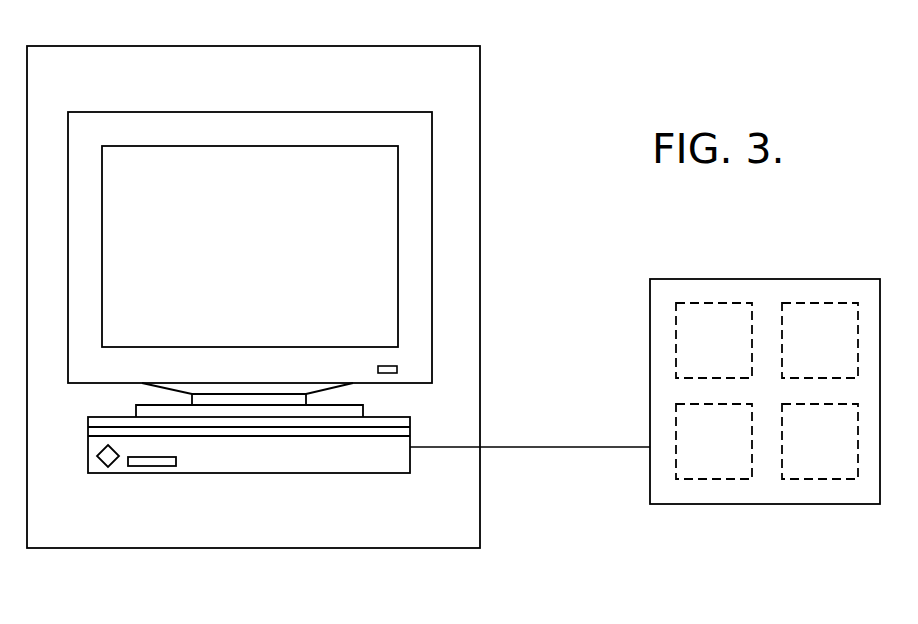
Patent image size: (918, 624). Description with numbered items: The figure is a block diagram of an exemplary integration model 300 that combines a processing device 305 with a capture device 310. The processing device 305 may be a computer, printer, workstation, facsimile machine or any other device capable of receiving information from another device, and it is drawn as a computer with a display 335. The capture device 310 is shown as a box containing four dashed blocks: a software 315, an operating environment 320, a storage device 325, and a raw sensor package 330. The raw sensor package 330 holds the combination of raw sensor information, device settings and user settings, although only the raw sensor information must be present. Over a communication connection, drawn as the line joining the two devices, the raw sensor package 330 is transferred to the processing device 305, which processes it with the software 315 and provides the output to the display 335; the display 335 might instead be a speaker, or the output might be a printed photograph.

The integration model 300 is at (600, 549).
The processing device 305 is at (178, 46).
The display 335 is at (353, 112).
The capture device 310 is at (650, 397).
The software 315 is at (818, 302).
The operating environment 320 is at (819, 480).
The storage device 325 is at (717, 302).
The raw sensor package 330 is at (718, 480).